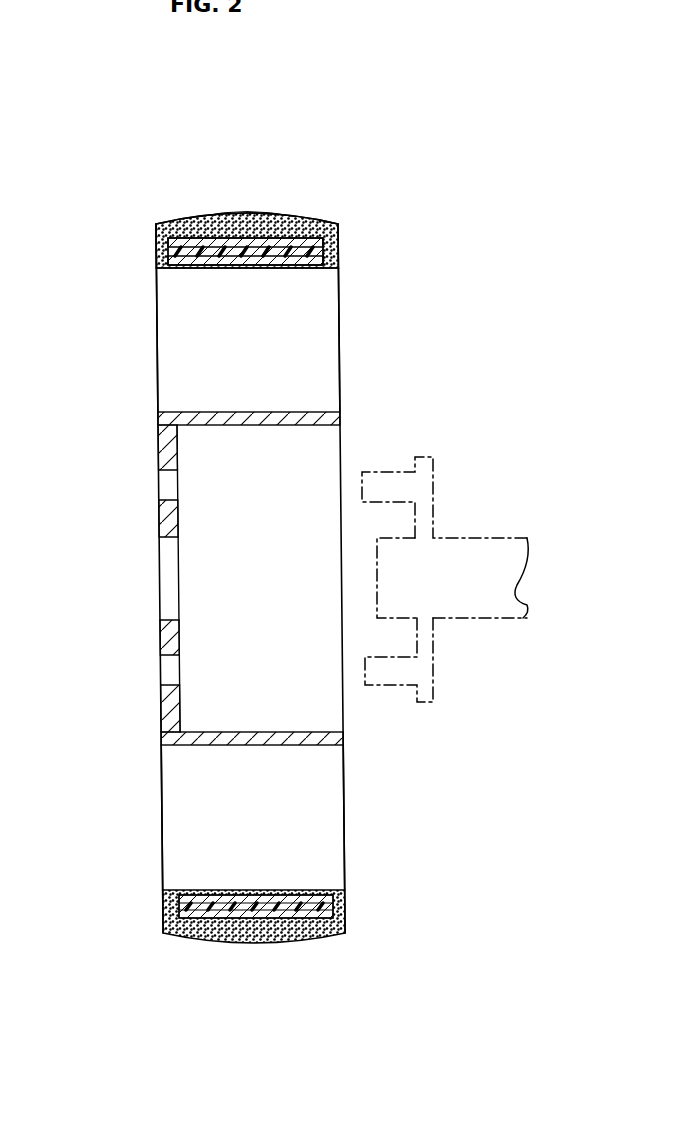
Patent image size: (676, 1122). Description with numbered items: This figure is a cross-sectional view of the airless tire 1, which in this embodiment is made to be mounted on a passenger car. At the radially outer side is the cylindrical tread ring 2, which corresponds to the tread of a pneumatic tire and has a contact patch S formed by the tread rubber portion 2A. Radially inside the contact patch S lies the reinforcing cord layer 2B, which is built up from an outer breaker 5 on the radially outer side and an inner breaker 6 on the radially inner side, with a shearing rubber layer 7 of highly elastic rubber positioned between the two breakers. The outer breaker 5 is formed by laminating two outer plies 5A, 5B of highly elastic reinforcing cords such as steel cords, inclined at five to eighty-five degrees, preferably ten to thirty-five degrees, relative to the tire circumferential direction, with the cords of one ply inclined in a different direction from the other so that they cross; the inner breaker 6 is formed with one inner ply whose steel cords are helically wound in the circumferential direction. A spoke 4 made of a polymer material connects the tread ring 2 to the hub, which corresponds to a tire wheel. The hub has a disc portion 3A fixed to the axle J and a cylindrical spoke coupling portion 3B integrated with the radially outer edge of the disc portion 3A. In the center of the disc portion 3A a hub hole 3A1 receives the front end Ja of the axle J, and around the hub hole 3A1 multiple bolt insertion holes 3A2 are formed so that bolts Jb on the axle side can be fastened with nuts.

The airless tire 1 is at (338, 172).
The tread ring 2 is at (144, 214).
The tread rubber portion 2A is at (258, 231).
The reinforcing cord layer 2B is at (182, 236).
The contact patch S is at (218, 215).
The spoke 4 is at (156, 332).
The outer breaker 5 is at (270, 209).
The outer ply 5A is at (338, 224).
The outer ply 5B is at (293, 238).
The inner breaker 6 is at (340, 268).
The shearing rubber layer 7 is at (175, 252).
The disc portion 3A is at (165, 705).
The hub hole 3A1 is at (163, 541).
The bolt insertion holes 3A2 is at (165, 660).
The spoke coupling portion 3B is at (233, 746).
The axle J is at (445, 602).
The front end Ja is at (393, 620).
The bolts Jb is at (396, 687).